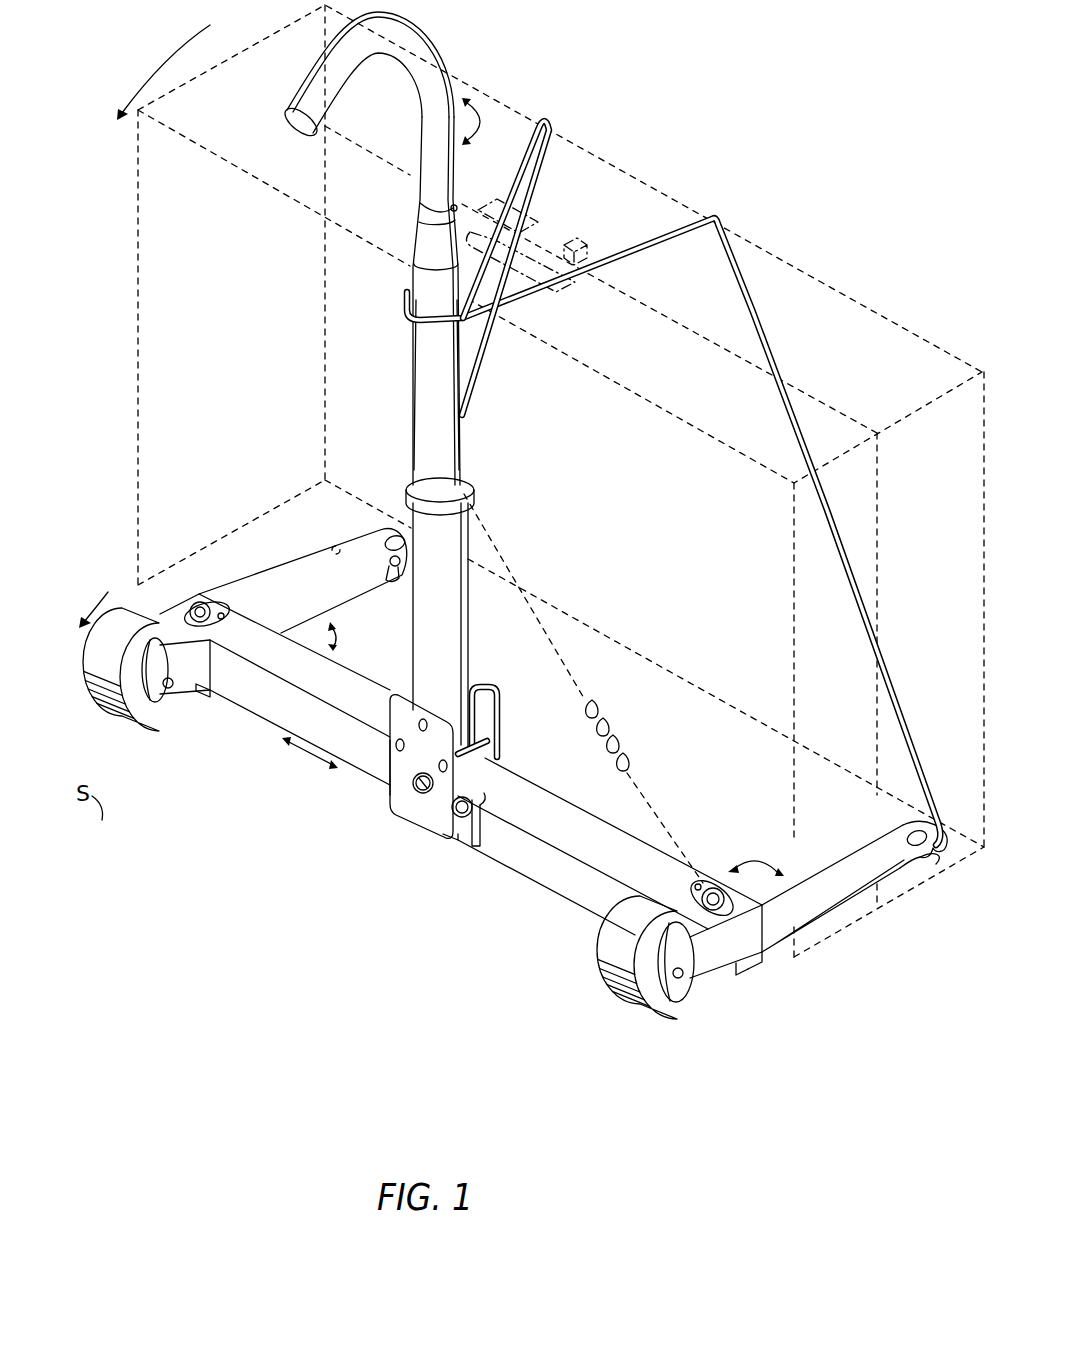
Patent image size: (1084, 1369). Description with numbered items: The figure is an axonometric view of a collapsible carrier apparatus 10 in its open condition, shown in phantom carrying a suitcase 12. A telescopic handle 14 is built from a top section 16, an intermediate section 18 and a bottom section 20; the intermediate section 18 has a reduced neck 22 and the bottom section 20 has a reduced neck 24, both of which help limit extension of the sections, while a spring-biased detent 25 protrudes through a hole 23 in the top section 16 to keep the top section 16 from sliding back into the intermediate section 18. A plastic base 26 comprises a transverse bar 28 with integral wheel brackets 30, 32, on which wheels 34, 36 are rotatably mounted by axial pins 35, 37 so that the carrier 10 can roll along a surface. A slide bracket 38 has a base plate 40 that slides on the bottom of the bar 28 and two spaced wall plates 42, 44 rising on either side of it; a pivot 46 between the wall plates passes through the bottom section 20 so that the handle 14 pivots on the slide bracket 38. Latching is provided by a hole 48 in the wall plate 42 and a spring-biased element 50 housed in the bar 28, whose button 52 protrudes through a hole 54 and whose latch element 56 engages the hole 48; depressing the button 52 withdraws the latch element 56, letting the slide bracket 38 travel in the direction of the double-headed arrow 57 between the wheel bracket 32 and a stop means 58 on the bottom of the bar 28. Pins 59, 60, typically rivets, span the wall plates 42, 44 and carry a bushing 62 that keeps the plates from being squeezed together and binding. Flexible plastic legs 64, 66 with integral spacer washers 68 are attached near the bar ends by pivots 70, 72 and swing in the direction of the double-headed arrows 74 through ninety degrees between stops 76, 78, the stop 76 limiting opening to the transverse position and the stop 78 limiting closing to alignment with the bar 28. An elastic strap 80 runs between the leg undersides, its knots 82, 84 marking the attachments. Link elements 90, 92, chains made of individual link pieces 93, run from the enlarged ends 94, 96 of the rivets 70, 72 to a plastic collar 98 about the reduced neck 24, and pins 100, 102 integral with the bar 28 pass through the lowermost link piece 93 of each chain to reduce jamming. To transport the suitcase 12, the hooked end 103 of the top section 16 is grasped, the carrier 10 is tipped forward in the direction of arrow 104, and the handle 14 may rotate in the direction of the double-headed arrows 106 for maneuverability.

The carrier apparatus 10 is at (516, 779).
The suitcase 12 is at (140, 166).
The telescopic handle 14 is at (385, 248).
The top section 16 is at (365, 248).
The intermediate section 18 is at (437, 312).
The bottom section 20 is at (460, 603).
The reduced neck 22 is at (418, 232).
The hole 23 is at (430, 207).
The reduced neck 24 is at (418, 481).
The spring-biased detent 25 is at (456, 206).
The plastic base 26 is at (278, 725).
The transverse bar 28 is at (548, 860).
The wheel bracket 30 is at (680, 995).
The wheel bracket 32 is at (172, 702).
The wheel 34 is at (608, 993).
The axial pin 35 is at (684, 976).
The wheel 36 is at (128, 610).
The axial pin 37 is at (166, 688).
The slide bracket 38 is at (396, 814).
The base plate 40 is at (448, 838).
The wall plate 42 is at (394, 763).
The wall plate 44 is at (497, 690).
The pivot 46 is at (422, 720).
The hole 48 is at (414, 793).
The spring-biased element 50 is at (485, 798).
The button 52 is at (470, 810).
The hole 54 is at (472, 843).
The latch element 56 is at (416, 784).
The double-headed arrow 57 is at (302, 751).
The stop means 58 is at (478, 846).
The pin 59 is at (397, 741).
The pin 60 is at (448, 768).
The bushing 62 is at (490, 752).
The flexible plastic leg 64 is at (861, 860).
The flexible plastic leg 66 is at (362, 548).
The spacer washer 68 is at (738, 972).
The pivot 70 is at (718, 874).
The pivot 72 is at (220, 612).
The double-headed arrow 74 is at (334, 626).
The stop 76 is at (760, 962).
The stop 78 is at (203, 698).
The elastic strap 80 is at (792, 433).
The knot 82 is at (918, 862).
The knot 84 is at (395, 582).
The link element 90 is at (537, 603).
The link element 92 is at (325, 543).
The link piece 93 is at (627, 764).
The enlarged end 94 is at (727, 888).
The enlarged end 96 is at (201, 601).
The collar 98 is at (470, 486).
The pin 100 is at (695, 884).
The pin 102 is at (224, 607).
The hooked end 103 is at (324, 68).
The arrow 104 is at (140, 326).
The double-headed arrow 106 is at (493, 93).